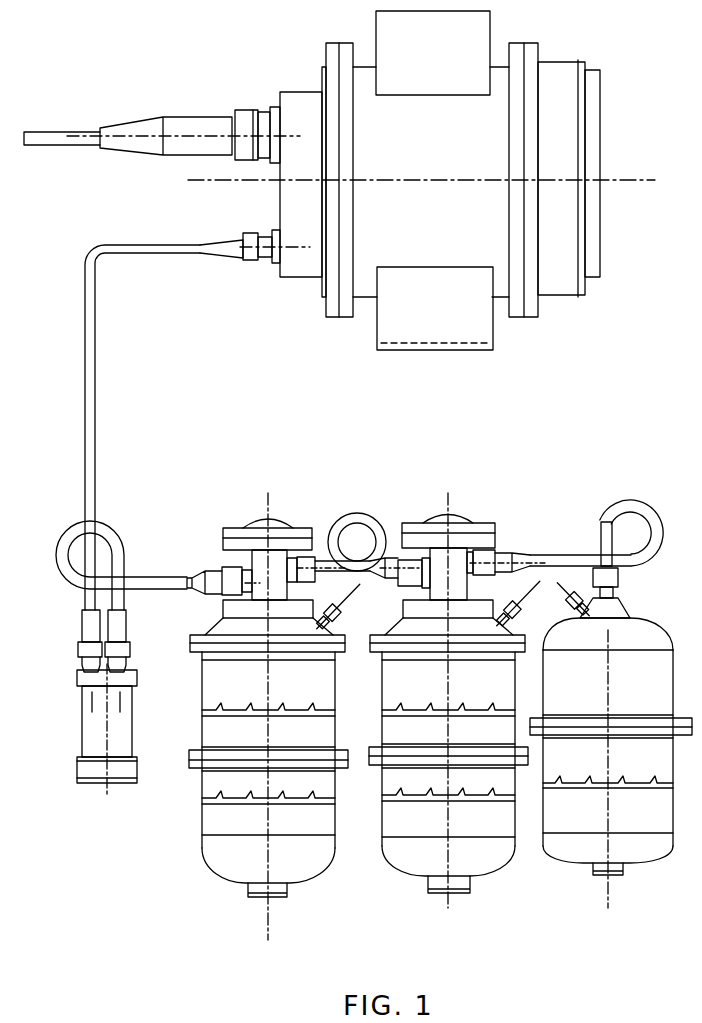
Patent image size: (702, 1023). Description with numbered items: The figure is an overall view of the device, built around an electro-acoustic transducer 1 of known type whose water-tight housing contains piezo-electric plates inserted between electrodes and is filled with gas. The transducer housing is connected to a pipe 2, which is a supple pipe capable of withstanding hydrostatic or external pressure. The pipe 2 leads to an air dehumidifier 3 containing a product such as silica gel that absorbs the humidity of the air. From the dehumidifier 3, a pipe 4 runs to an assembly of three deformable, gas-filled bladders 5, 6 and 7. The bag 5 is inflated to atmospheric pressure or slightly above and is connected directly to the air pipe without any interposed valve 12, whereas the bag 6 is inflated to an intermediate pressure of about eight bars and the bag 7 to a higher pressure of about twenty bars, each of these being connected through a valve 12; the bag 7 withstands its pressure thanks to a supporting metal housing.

The pump unit 1 is at (470, 228).
The pipe 2 is at (90, 422).
The air dehumidifier 3 is at (120, 767).
The pipe 4 is at (162, 580).
The deformable bladder 5 is at (650, 812).
The deformable bladder 6 is at (490, 850).
The deformable bladder 7 is at (305, 858).
The valve 12 is at (443, 568).